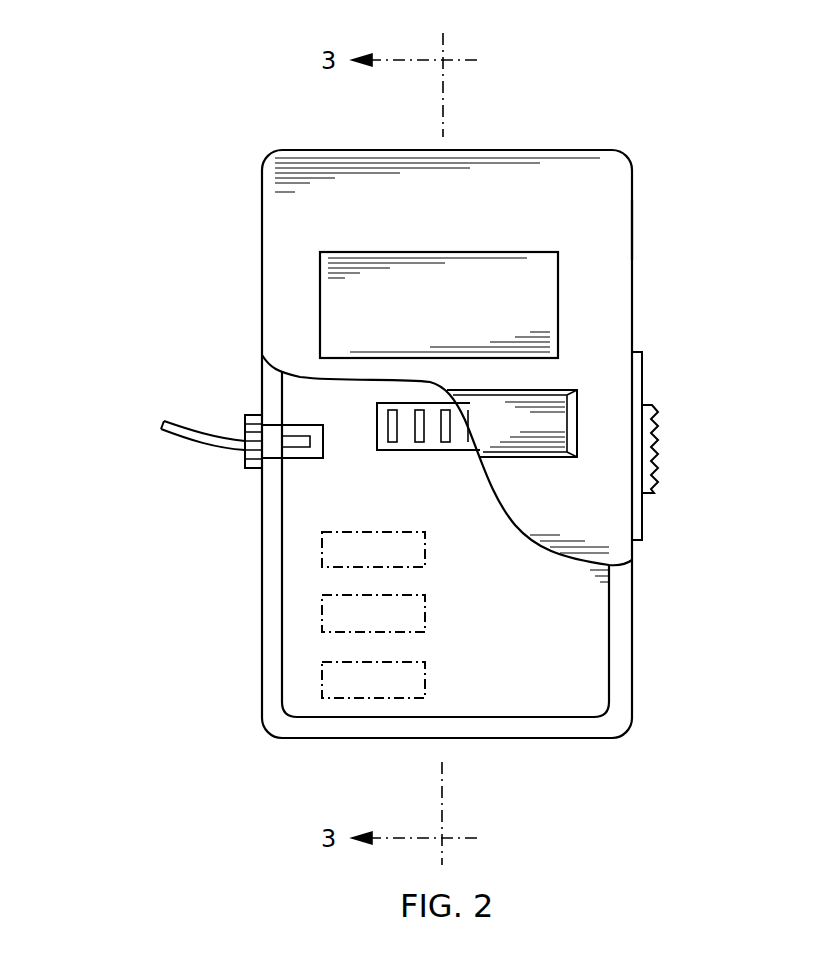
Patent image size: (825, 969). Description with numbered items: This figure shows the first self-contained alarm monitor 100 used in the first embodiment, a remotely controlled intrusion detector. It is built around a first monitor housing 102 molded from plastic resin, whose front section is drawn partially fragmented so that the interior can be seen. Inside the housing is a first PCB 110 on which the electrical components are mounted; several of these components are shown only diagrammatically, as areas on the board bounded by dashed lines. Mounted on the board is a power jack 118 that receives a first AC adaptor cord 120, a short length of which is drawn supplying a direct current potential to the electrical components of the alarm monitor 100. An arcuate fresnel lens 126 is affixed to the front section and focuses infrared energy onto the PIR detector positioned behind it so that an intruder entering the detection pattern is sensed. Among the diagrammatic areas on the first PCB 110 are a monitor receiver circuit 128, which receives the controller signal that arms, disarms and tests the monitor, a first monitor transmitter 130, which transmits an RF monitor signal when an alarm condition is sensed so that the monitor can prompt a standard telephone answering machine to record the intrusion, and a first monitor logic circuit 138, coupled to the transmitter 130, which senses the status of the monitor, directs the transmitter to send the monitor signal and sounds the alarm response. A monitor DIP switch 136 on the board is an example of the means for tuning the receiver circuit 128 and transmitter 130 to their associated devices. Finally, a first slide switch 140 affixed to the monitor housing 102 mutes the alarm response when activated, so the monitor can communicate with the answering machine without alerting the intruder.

The first self-contained alarm monitor 100 is at (551, 150).
The first monitor housing 102 is at (632, 229).
The first PCB 110 is at (530, 645).
The power jack 118 is at (245, 462).
The first AC adaptor cord 120 is at (185, 423).
The arcuate fresnel lens 126 is at (380, 252).
The monitor receiver circuit 128 is at (322, 548).
The first monitor transmitter 130 is at (322, 609).
The monitor DIP switch 136 is at (415, 450).
The first monitor logic circuit 138 is at (322, 676).
The first slide switch 140 is at (656, 448).